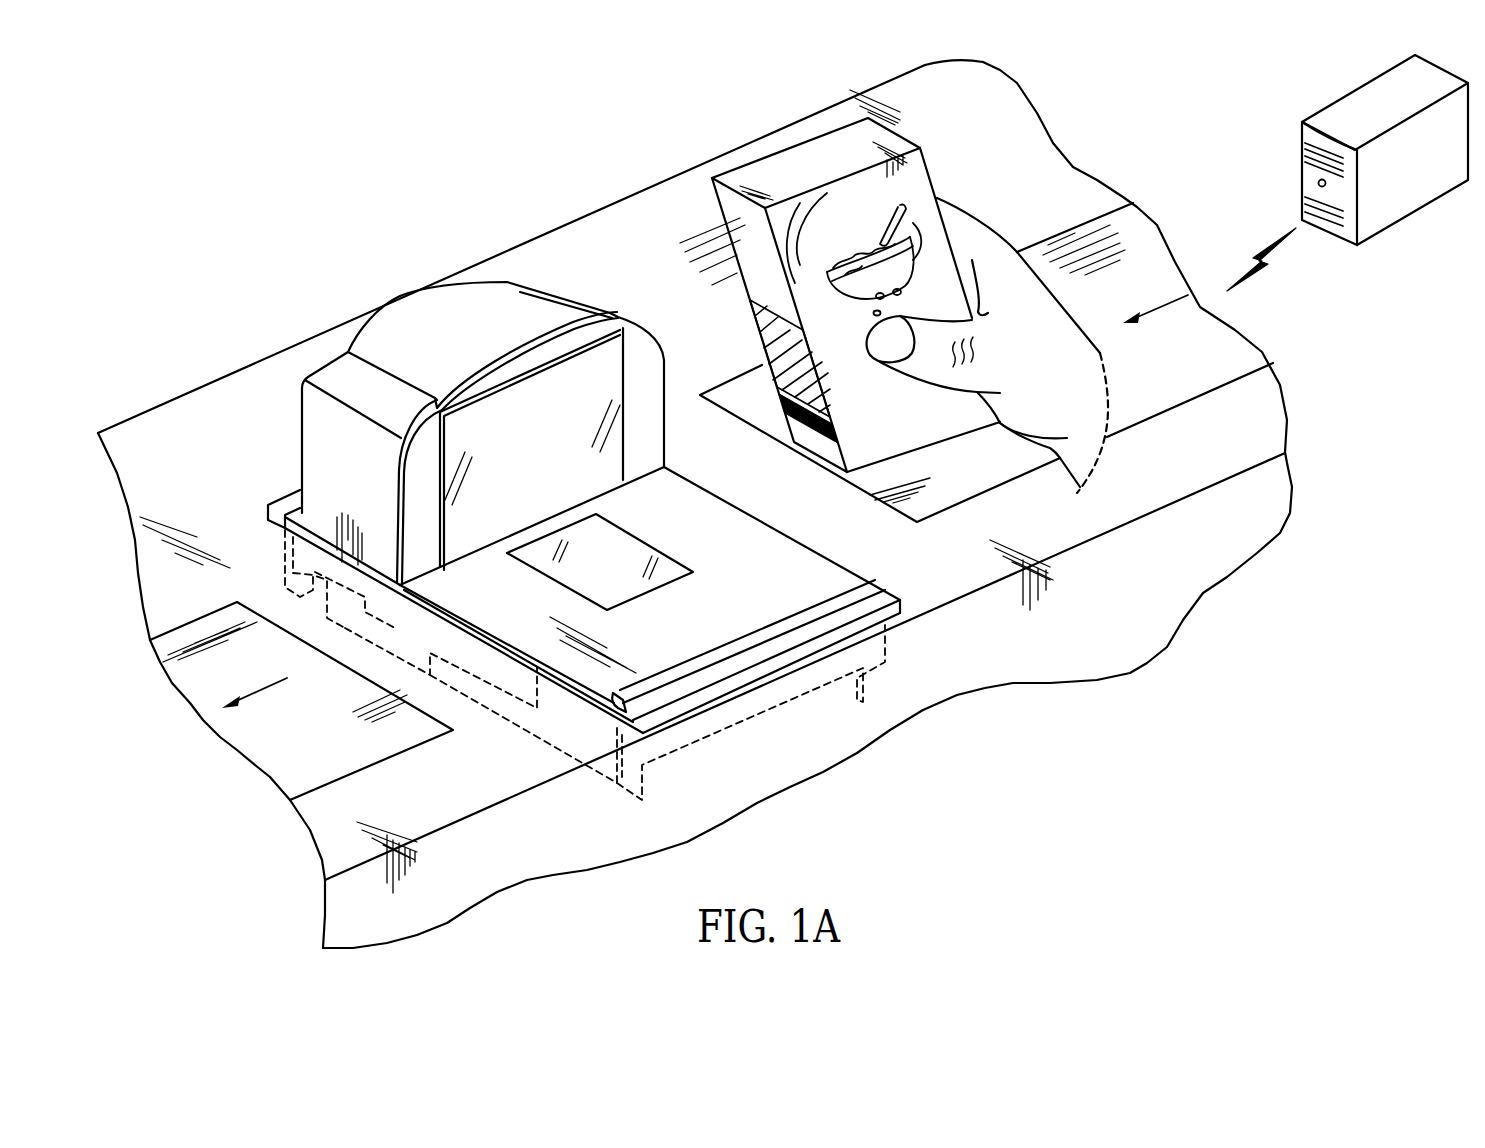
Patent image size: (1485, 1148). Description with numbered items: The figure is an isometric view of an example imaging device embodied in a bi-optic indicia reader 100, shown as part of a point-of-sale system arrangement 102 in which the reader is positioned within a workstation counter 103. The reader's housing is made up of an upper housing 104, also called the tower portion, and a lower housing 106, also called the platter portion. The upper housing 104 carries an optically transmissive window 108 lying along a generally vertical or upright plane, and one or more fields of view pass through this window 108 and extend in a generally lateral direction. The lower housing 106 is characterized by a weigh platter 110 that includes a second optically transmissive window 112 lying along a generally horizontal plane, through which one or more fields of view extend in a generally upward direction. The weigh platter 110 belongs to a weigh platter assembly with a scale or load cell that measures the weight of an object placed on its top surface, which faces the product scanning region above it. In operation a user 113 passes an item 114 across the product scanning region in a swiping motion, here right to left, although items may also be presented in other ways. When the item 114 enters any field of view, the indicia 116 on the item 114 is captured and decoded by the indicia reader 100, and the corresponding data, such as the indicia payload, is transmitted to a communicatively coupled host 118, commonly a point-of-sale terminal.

The bi-optic indicia reader 100 is at (196, 327).
The point-of-sale system arrangement 102 is at (585, 200).
The workstation counter 103 is at (197, 479).
The upper housing 104 is at (407, 333).
The lower housing 106 is at (551, 712).
The optically transmissive window 108 is at (493, 432).
The weigh platter 110 is at (762, 616).
The optically transmissive window 112 is at (556, 586).
The user 113 is at (1070, 343).
The item 114 is at (782, 165).
The indicia 116 is at (836, 432).
The host 118 is at (1302, 168).